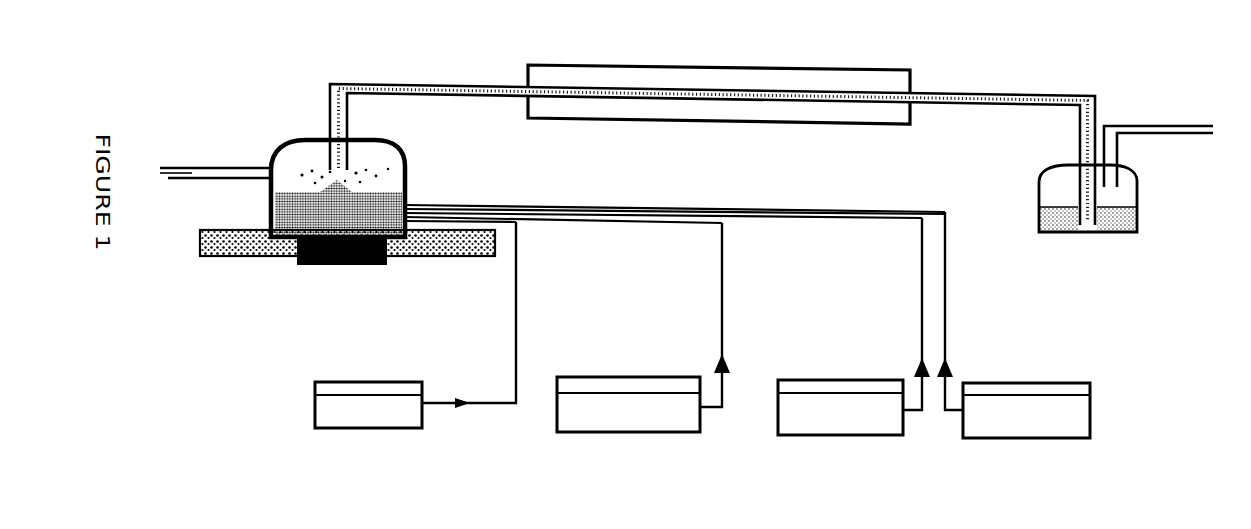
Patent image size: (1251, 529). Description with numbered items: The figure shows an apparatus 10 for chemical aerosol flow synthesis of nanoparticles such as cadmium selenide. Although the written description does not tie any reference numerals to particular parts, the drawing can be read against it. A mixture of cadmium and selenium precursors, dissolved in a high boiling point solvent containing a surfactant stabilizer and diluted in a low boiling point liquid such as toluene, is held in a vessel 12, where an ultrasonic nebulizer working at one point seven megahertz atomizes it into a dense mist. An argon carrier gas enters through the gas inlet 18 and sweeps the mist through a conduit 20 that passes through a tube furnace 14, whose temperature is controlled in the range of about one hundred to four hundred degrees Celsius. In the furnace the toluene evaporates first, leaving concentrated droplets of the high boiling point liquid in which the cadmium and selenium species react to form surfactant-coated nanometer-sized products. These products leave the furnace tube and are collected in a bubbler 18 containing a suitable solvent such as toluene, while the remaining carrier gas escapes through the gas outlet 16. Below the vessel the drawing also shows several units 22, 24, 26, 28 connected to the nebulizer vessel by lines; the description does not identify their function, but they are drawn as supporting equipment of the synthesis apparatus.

The apparatus 10 is at (423, 158).
The reaction vessel 12 is at (316, 163).
The furnace tube 14 is at (868, 70).
The gas outlet 16 is at (1174, 145).
The gas inlet / bubbler trap 18 is at (1172, 203).
The gas conduit 20 is at (638, 94).
The controller box 22 is at (384, 418).
The controller box 24 is at (603, 418).
The controller box 26 is at (816, 418).
The controller box 28 is at (1002, 419).